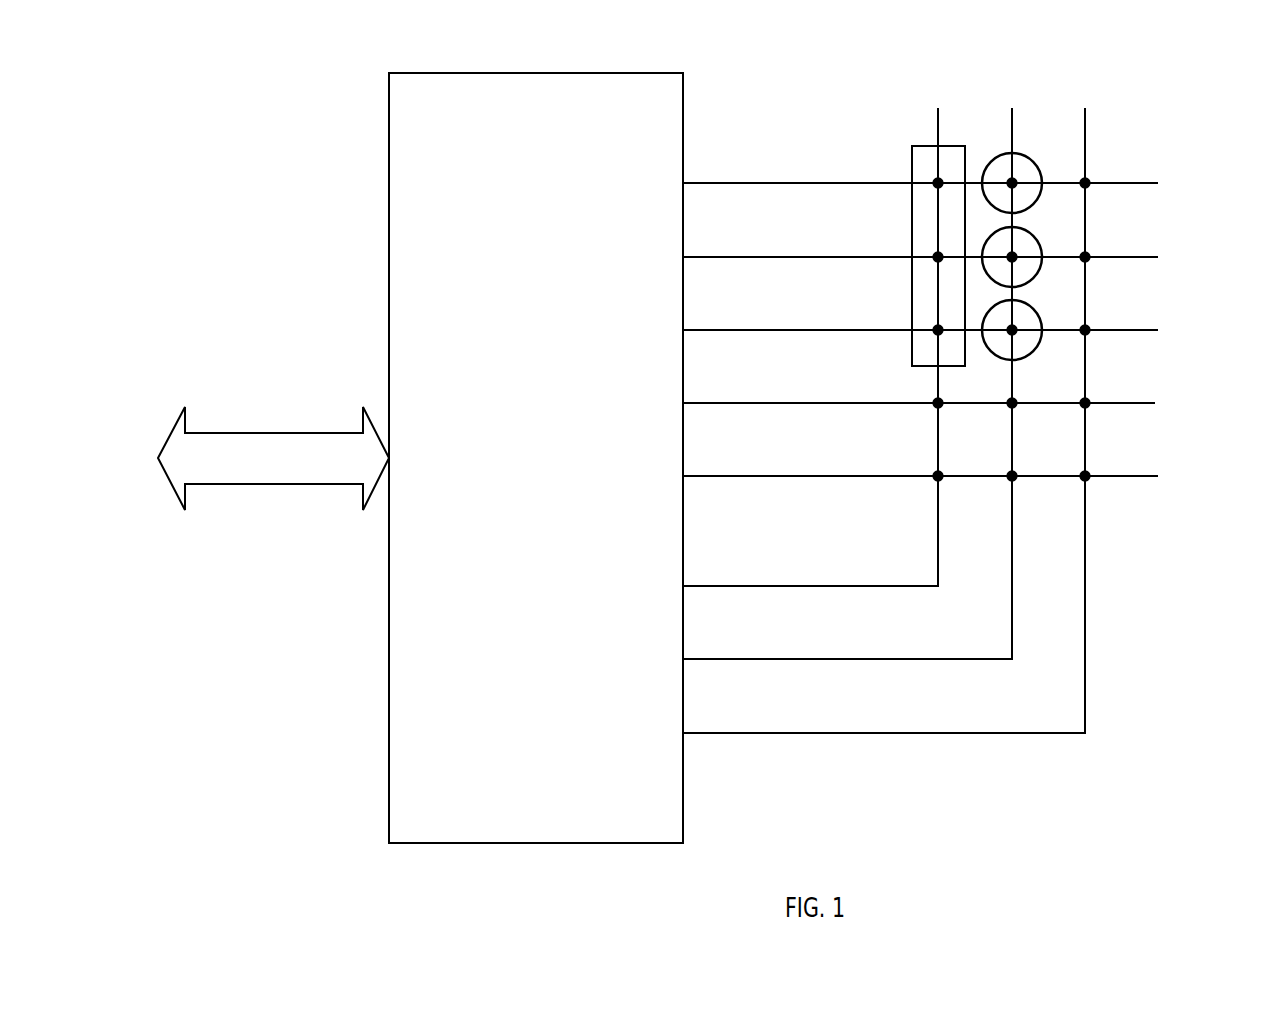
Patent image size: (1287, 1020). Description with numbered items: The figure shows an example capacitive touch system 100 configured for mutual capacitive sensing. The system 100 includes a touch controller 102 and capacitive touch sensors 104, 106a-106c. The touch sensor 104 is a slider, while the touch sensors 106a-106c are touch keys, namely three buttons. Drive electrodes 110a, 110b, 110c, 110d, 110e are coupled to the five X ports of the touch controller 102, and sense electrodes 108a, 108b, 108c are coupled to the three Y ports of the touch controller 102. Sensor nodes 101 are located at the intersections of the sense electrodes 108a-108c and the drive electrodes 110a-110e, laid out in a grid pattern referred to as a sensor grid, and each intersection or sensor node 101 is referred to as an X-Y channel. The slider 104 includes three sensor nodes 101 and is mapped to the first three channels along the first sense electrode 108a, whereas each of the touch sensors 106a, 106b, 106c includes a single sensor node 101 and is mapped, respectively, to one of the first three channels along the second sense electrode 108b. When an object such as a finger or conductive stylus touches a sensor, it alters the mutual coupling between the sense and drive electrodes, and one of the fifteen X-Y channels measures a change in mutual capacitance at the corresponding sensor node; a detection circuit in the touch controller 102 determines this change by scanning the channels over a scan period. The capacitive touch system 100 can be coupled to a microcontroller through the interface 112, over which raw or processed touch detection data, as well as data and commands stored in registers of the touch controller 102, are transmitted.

The capacitive touch system 100 is at (783, 41).
The sensor nodes 101 is at (938, 476).
The touch controller 102 is at (642, 836).
The touch sensor 104 is at (912, 146).
The touch sensors 106a-106c is at (1115, 208).
The touch sensor 106a is at (1012, 183).
The touch sensor 106b is at (1012, 257).
The touch sensor 106c is at (1020, 302).
The sense electrode 108a is at (900, 587).
The sense electrode 108b is at (975, 660).
The sense electrode 108c is at (1060, 734).
The drive electrode 110a is at (1158, 183).
The drive electrode 110b is at (1158, 257).
The drive electrode 110c is at (1158, 330).
The drive electrode 110d is at (1155, 403).
The drive electrode 110e is at (1158, 476).
The interface 112 is at (262, 484).